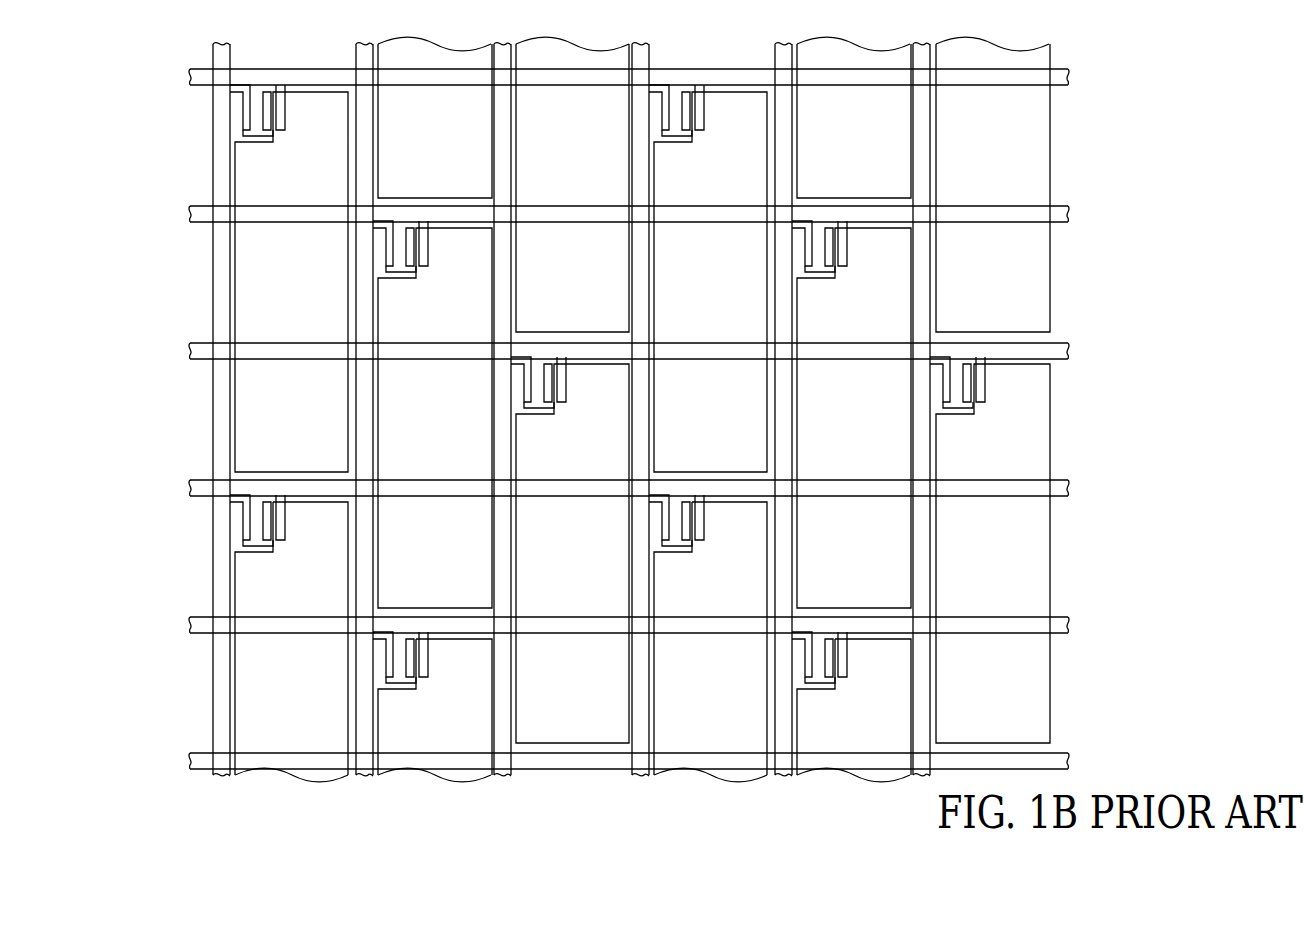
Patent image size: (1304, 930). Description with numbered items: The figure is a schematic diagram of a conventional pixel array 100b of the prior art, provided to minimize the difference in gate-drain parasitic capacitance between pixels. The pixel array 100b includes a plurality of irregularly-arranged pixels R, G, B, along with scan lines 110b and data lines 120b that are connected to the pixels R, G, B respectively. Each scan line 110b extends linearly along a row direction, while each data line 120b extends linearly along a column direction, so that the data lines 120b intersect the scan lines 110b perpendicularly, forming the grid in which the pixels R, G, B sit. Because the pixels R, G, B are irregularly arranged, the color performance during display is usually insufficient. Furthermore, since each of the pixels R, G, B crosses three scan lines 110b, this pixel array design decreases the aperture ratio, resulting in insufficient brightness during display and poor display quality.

The pixel array 100b is at (1138, 678).
The scan line 110b is at (222, 53).
The data line 120b is at (205, 80).